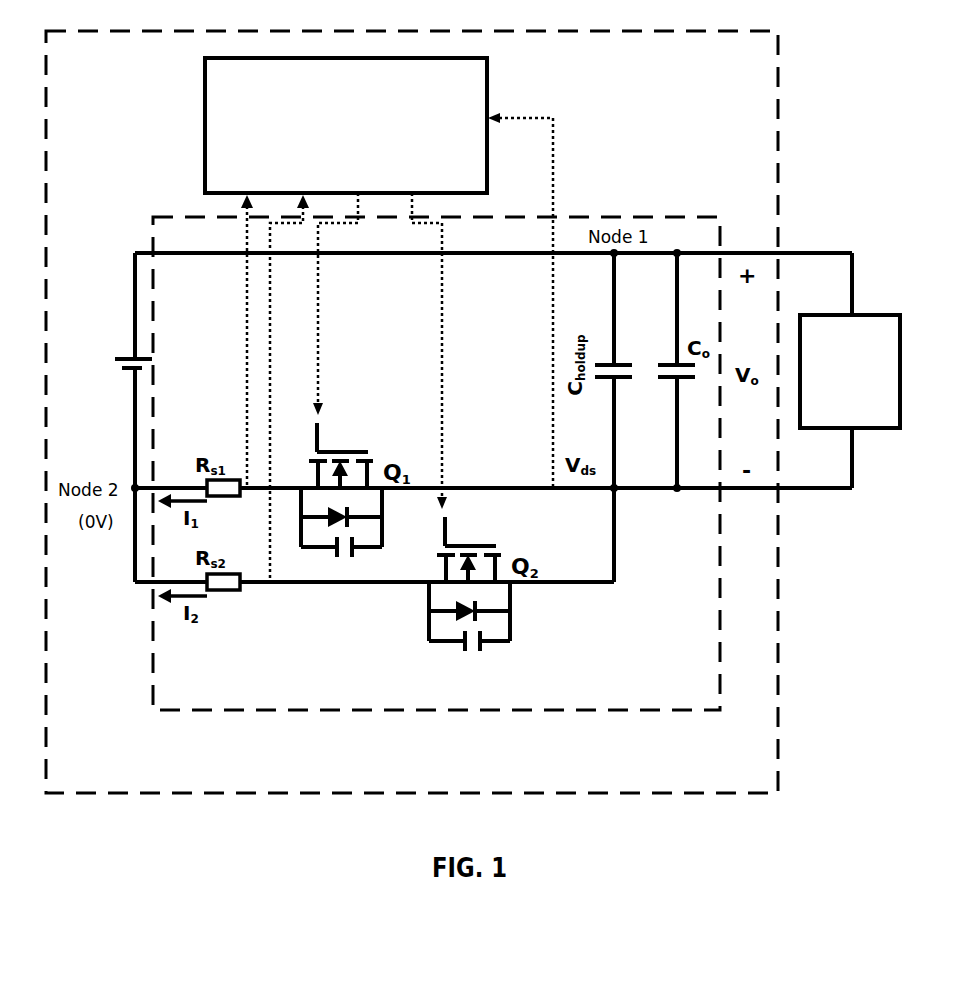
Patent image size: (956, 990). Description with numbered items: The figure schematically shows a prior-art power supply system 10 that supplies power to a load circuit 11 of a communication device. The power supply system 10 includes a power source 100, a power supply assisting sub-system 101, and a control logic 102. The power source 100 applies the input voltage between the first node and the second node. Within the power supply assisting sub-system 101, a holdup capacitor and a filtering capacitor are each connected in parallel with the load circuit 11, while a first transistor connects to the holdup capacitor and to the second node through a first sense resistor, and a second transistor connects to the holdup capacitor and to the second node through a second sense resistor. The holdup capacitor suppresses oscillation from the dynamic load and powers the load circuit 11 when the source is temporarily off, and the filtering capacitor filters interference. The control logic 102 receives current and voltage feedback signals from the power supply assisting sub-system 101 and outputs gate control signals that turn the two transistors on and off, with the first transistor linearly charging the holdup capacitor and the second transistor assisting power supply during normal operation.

The power supply system 10 is at (365, 771).
The power source 100 is at (118, 394).
The power supply assisting sub-system 101 is at (650, 694).
The control logic 102 is at (345, 146).
The load circuit 11 is at (837, 417).